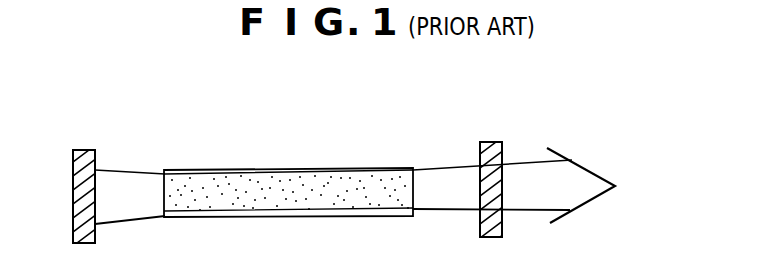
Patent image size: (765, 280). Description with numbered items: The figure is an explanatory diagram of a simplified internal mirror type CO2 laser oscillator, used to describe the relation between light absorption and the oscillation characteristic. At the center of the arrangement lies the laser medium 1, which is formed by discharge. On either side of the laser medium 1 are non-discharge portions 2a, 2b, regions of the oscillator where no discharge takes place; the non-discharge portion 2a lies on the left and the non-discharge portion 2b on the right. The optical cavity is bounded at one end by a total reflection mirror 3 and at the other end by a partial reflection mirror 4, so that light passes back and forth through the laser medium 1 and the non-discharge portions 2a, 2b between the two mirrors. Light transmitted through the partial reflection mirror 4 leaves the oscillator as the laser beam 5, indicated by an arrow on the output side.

The laser medium 1 is at (260, 168).
The non-discharge portion 2a is at (138, 210).
The non-discharge portion 2b is at (443, 205).
The total reflection mirror 3 is at (80, 150).
The partial reflection mirror 4 is at (497, 142).
The laser beam 5 is at (587, 207).